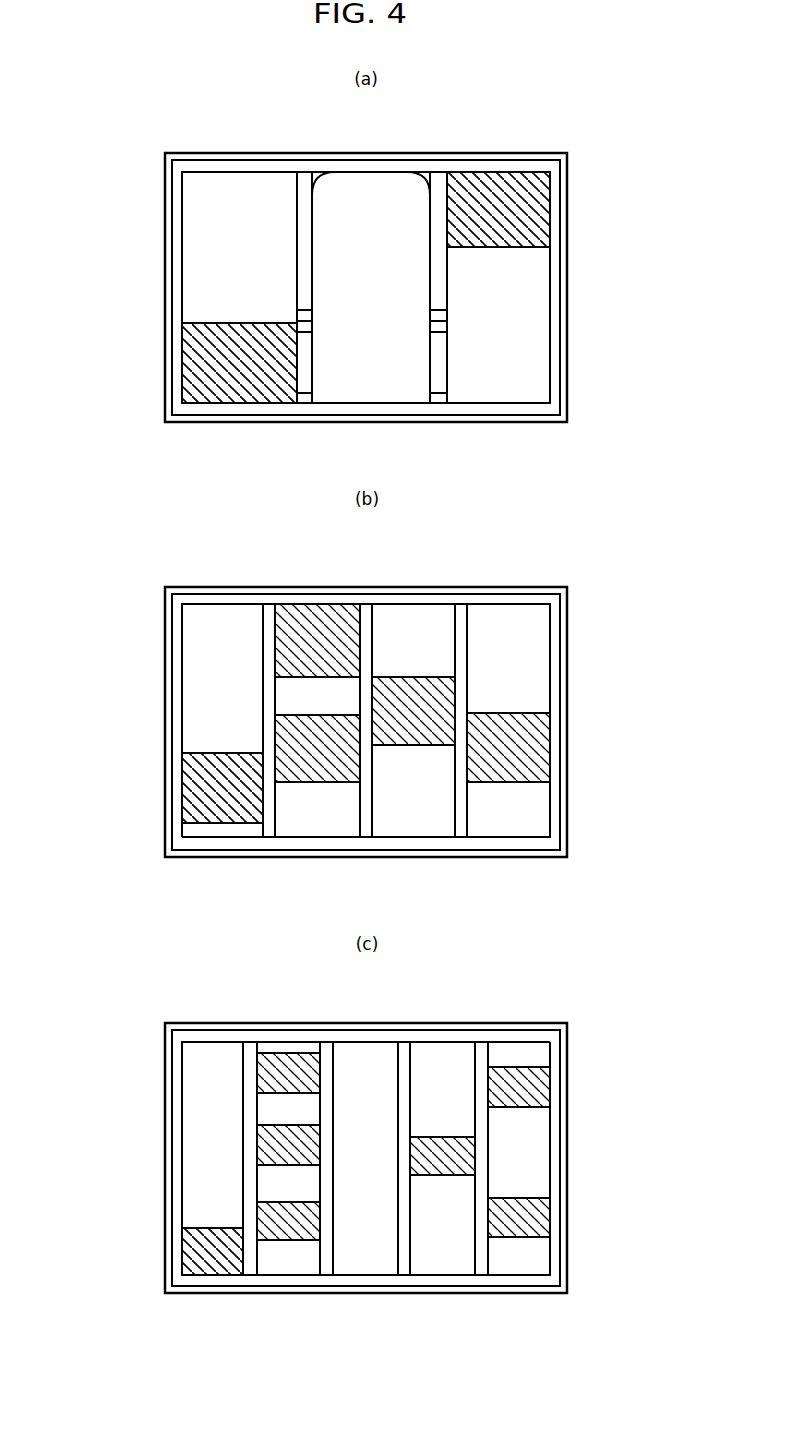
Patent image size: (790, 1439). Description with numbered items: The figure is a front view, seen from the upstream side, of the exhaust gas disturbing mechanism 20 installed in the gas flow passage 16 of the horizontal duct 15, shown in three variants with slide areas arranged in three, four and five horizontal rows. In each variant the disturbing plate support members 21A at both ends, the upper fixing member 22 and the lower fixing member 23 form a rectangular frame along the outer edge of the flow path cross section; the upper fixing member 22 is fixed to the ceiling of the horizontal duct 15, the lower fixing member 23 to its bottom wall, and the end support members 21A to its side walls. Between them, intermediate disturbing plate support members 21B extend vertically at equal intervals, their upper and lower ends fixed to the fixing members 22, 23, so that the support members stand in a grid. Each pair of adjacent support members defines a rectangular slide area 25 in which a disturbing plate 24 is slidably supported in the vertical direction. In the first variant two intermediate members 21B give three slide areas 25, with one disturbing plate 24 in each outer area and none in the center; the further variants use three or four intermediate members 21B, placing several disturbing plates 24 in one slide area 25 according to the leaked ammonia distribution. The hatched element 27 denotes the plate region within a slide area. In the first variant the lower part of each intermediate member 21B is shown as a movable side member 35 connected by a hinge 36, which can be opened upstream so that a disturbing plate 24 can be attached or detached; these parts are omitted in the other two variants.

The horizontal duct 15 is at (512, 152).
The gas flow passage 16 is at (361, 241).
The exhaust gas disturbing mechanism 20 is at (179, 150).
The disturbing plate support member at both ends 21A is at (177, 277).
The intermediate disturbing plate support member 21B is at (440, 207).
The upper fixing member 22 is at (265, 152).
The lower fixing member 23 is at (500, 412).
The disturbing plate 24 is at (507, 203).
The slide area 25 is at (223, 213).
The heat storage material 27 is at (222, 365).
The movable side member 35 is at (303, 357).
The hinge 36 is at (313, 313).